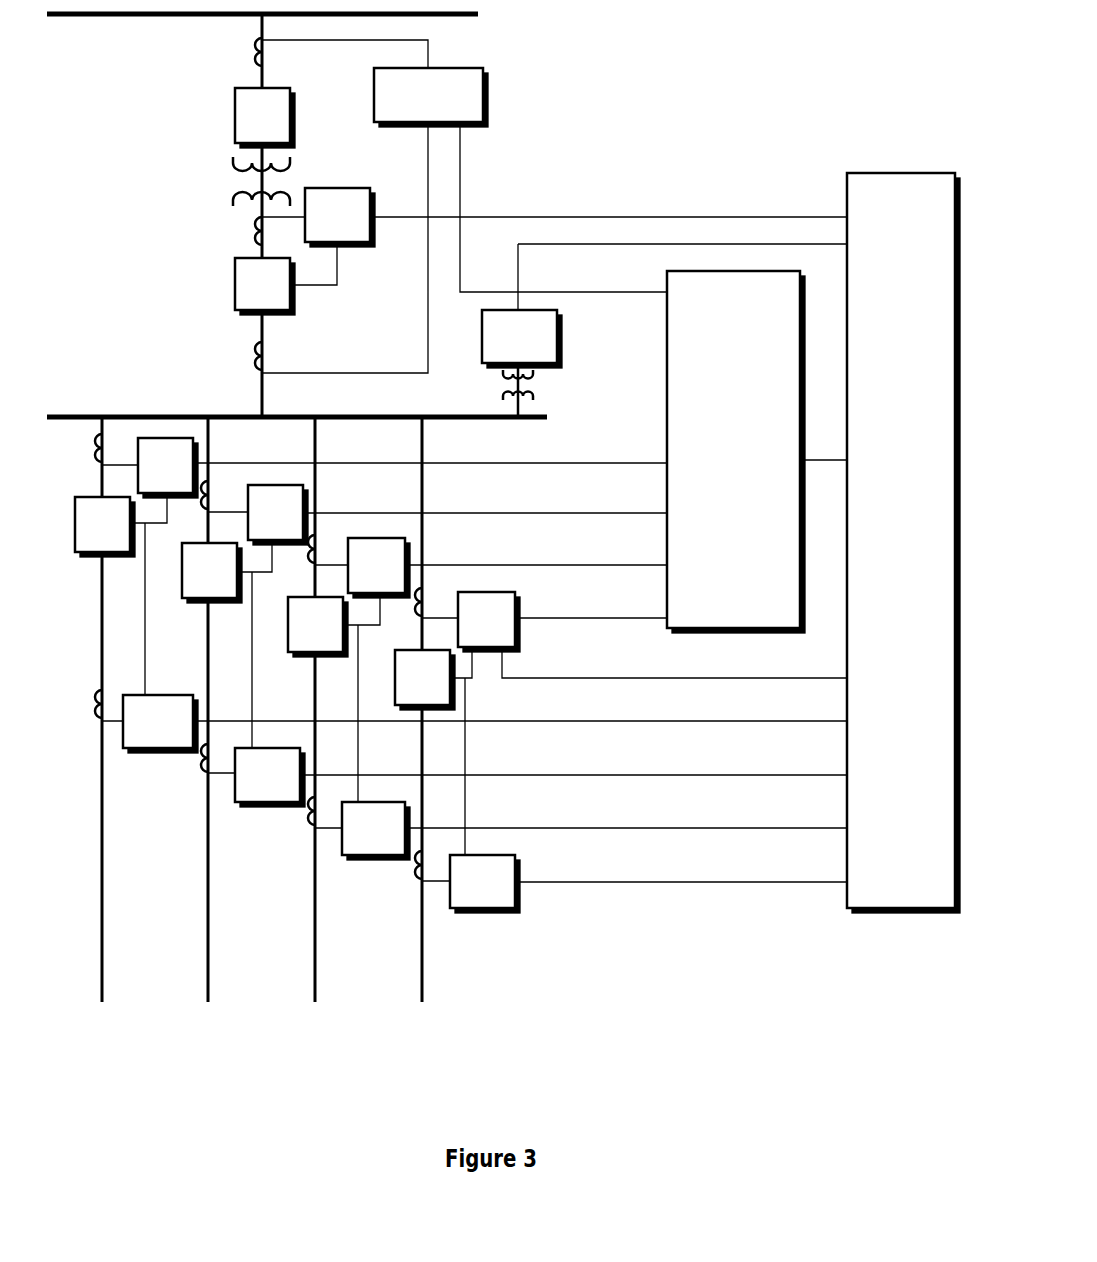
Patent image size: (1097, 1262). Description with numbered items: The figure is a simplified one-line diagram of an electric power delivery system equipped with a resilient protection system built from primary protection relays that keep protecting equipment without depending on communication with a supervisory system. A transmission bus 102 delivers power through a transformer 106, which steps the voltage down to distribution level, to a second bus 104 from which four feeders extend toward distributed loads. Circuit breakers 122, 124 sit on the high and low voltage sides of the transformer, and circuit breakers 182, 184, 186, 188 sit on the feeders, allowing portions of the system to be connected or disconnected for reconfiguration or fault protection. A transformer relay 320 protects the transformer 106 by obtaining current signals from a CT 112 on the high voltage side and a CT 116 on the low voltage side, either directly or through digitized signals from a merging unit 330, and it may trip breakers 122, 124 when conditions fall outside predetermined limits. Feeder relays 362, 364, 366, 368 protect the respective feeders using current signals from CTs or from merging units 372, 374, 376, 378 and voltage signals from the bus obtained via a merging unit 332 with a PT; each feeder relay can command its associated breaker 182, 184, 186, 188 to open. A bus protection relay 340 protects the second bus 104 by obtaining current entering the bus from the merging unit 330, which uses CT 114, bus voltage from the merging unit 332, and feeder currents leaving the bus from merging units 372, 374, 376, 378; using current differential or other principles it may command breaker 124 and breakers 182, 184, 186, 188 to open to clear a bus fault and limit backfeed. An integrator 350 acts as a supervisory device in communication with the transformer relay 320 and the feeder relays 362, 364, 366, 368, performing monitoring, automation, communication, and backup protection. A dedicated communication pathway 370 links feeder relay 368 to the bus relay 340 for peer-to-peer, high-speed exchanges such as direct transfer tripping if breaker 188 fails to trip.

The bus 102 is at (118, 17).
The second bus 104 is at (72, 416).
The transformer 106 is at (232, 170).
The CT 112 is at (254, 63).
The CT 114 is at (254, 245).
The CT 116 is at (254, 350).
The circuit breaker 122 is at (235, 113).
The circuit breaker 124 is at (235, 285).
The circuit breaker 182 is at (85, 556).
The circuit breaker 184 is at (192, 602).
The circuit breaker 186 is at (298, 654).
The circuit breaker 188 is at (455, 694).
The transformer relay 320 is at (448, 68).
The merging unit 330 is at (355, 188).
The merging unit 332 is at (560, 335).
The bus protection relay 340 is at (895, 173).
The integrator 350 is at (667, 431).
The feeder relay 362 is at (197, 456).
The feeder relay 364 is at (307, 501).
The feeder relay 366 is at (410, 557).
The feeder relay 368 is at (518, 604).
The dedicated communication pathway 370 is at (650, 678).
The merging unit 372 is at (155, 752).
The merging unit 374 is at (263, 806).
The merging unit 376 is at (372, 859).
The merging unit 378 is at (482, 912).